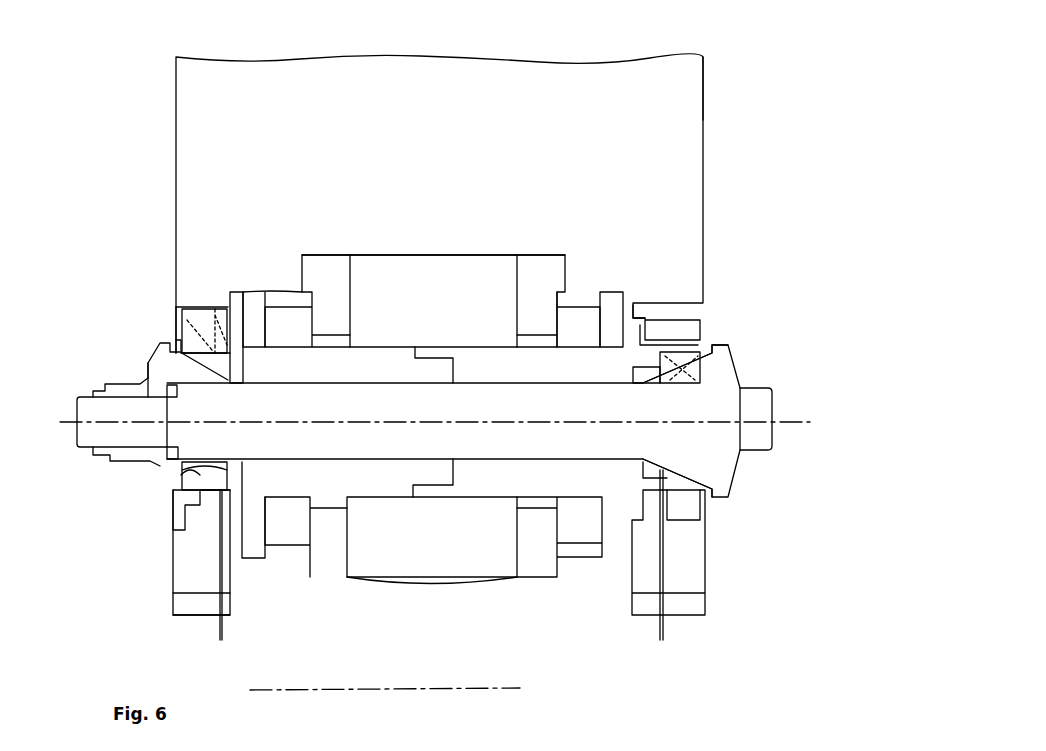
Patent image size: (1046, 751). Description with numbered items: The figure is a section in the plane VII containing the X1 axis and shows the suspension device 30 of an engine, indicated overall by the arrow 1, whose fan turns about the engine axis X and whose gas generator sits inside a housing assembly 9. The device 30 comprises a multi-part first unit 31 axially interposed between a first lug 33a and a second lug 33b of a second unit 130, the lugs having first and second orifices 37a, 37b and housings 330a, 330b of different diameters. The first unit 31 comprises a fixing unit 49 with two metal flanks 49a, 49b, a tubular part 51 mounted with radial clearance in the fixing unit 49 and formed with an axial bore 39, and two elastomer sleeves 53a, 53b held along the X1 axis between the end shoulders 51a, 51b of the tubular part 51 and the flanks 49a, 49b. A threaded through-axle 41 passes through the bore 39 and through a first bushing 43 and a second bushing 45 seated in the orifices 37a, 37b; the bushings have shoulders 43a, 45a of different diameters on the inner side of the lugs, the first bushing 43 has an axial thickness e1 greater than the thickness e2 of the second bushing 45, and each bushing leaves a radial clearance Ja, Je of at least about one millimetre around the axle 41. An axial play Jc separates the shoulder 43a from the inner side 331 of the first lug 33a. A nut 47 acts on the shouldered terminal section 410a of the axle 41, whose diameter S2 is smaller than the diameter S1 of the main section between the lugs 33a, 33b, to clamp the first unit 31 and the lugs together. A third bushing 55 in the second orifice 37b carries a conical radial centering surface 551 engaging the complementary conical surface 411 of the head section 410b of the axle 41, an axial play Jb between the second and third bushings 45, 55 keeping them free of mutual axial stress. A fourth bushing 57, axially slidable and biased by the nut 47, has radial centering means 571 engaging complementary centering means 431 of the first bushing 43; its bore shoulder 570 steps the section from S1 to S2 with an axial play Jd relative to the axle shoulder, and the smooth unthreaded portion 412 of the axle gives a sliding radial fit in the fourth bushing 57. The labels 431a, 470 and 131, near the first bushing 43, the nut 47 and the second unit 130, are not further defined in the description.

The motor 1 is at (540, 600).
The housing assembly 9 is at (265, 575).
The suspension device 30 is at (105, 570).
The first unit 31 is at (490, 580).
The first lug 33a is at (173, 593).
The second lug 33b is at (695, 582).
The housing of the first lug 330a is at (215, 322).
The housing of the second lug 330b is at (655, 600).
The inner side of the first lug 331 is at (224, 494).
The first orifice 37a is at (180, 520).
The second orifice 37b is at (690, 540).
The axial bore 39 is at (556, 300).
The through-axle 41 is at (758, 382).
The terminal section 410a is at (78, 412).
The head section 410b is at (740, 405).
The complementary centering means 411 is at (715, 492).
The smooth portion 412 is at (245, 393).
The first bushing 43 is at (222, 312).
The shoulder of the first bushing 43a is at (176, 300).
The complementary centering means of the first bushing 431 is at (185, 470).
The inner ring end face 431a is at (170, 498).
The second bushing 45 is at (645, 320).
The shoulder of the second bushing 45a is at (640, 338).
The clamping unit 47 is at (115, 372).
The sensor magnet holder 470 is at (112, 380).
The fixing unit 49 is at (471, 242).
The first metal flank 49a is at (331, 262).
The second metal flank 49b is at (558, 262).
The tubular part 51 is at (405, 500).
The first shoulder of the tubular part 51a is at (255, 298).
The second shoulder of the tubular part 51b is at (608, 296).
The first elastomer sleeve 53a is at (290, 580).
The second elastomer sleeve 53b is at (578, 580).
The third bushing 55 is at (688, 362).
The radial centering means 551 is at (685, 515).
The fourth bushing 57 is at (158, 335).
The shoulder of the fourth bushing 570 is at (180, 452).
The radial centering means of the fourth bushing 571 is at (155, 460).
The second unit 130 is at (672, 222).
The housing wall 131 is at (676, 113).
The axial thickness of the first bushing e1 is at (228, 357).
The axial thickness of the second bushing e2 is at (673, 357).
The radial clearance Ja is at (608, 345).
The axial play Jb is at (688, 636).
The axial play Jc is at (248, 636).
The axial play Jd is at (143, 408).
The radial clearance Je is at (262, 340).
The main section S1 is at (363, 383).
The terminal section S2 is at (133, 397).
The X axis X is at (384, 690).
The X1 axis X1 is at (790, 424).
The plane VII is at (870, 340).